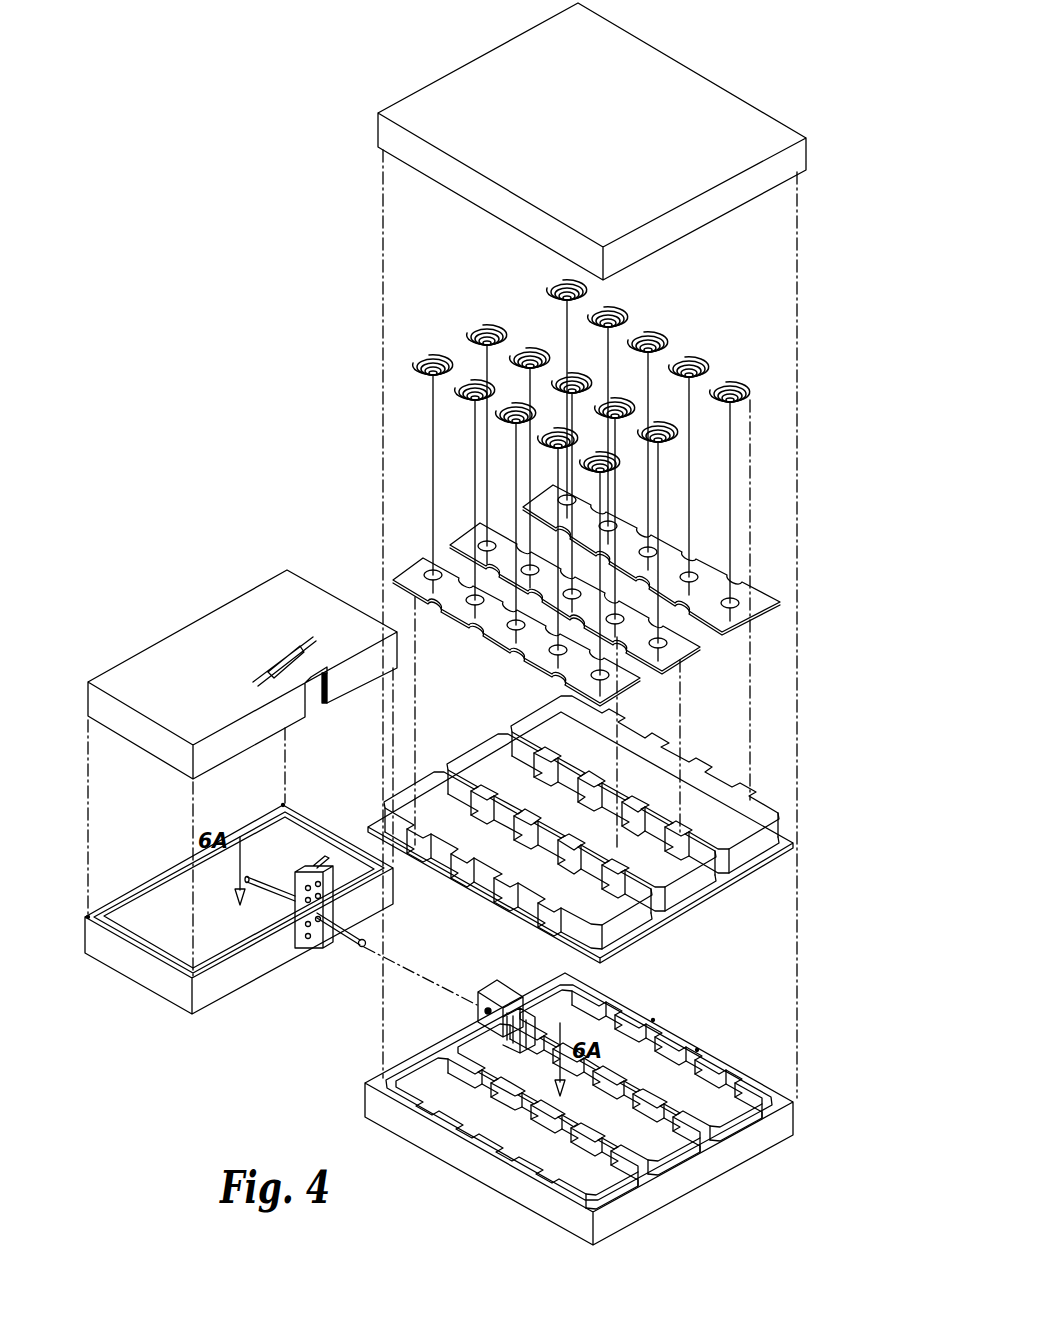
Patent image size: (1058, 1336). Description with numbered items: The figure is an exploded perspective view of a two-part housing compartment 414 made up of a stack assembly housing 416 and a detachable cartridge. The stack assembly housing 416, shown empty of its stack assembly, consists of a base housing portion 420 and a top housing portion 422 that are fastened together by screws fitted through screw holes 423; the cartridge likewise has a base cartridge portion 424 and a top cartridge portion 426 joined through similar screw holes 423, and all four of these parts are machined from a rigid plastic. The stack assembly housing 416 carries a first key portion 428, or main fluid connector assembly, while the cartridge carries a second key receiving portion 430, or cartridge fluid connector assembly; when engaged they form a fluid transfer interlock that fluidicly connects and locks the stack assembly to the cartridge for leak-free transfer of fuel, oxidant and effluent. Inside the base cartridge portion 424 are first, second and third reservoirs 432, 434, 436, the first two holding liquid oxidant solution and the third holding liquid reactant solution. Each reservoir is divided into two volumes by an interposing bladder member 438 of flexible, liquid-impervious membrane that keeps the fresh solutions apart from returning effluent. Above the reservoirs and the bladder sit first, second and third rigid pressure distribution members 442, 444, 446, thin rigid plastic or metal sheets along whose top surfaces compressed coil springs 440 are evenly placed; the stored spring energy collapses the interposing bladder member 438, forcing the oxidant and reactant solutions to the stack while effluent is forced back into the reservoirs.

The two-part housing compartment 414 is at (258, 265).
The stack assembly housing 416 is at (224, 794).
The base housing portion 420 is at (130, 960).
The top housing portion 422 is at (197, 645).
The screw holes 423 is at (88, 915).
The base cartridge portion 424 is at (454, 1009).
The top cartridge portion 426 is at (797, 160).
The first key portion 428 is at (323, 937).
The second key receiving portion 430 is at (498, 982).
The first reservoir 432 is at (572, 1180).
The second reservoir 434 is at (632, 1150).
The third reservoir 436 is at (702, 1113).
The interposing bladder member 438 is at (727, 832).
The coil springs 440 is at (747, 388).
The first rigid pressure distribution member 442 is at (620, 678).
The second rigid pressure distribution member 444 is at (677, 647).
The third rigid pressure distribution member 446 is at (776, 600).